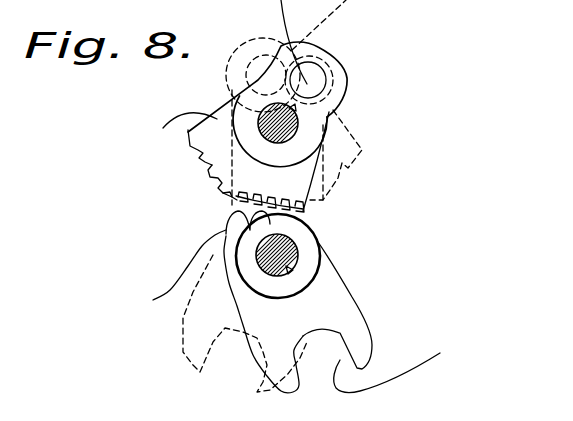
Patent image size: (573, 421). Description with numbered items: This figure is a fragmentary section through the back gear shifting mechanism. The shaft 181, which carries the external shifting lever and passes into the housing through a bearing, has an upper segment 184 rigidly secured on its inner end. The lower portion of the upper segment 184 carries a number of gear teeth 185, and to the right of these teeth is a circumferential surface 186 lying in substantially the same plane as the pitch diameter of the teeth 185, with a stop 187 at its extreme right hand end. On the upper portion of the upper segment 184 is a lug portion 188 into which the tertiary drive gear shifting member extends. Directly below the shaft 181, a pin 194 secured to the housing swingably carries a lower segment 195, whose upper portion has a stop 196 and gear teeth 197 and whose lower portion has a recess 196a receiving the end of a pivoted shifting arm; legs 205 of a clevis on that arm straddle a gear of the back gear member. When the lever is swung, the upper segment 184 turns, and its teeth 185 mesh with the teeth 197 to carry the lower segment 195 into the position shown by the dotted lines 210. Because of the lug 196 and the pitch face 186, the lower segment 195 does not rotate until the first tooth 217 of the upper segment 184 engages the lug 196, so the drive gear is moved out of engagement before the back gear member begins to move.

The shaft 181 is at (289, 139).
The upper segment 184 is at (169, 139).
The gear teeth 185 is at (200, 160).
The surface 186 is at (233, 203).
The stop 187 is at (300, 213).
The lug portion 188 is at (323, 67).
The pin 194 is at (300, 257).
The lower segment 195 is at (342, 297).
The stop 196 is at (293, 194).
The recess 196a is at (423, 362).
The gear teeth 197 is at (174, 276).
The legs 205 is at (255, 55).
The dotted lines 210 is at (183, 343).
The first tooth 217 is at (234, 190).